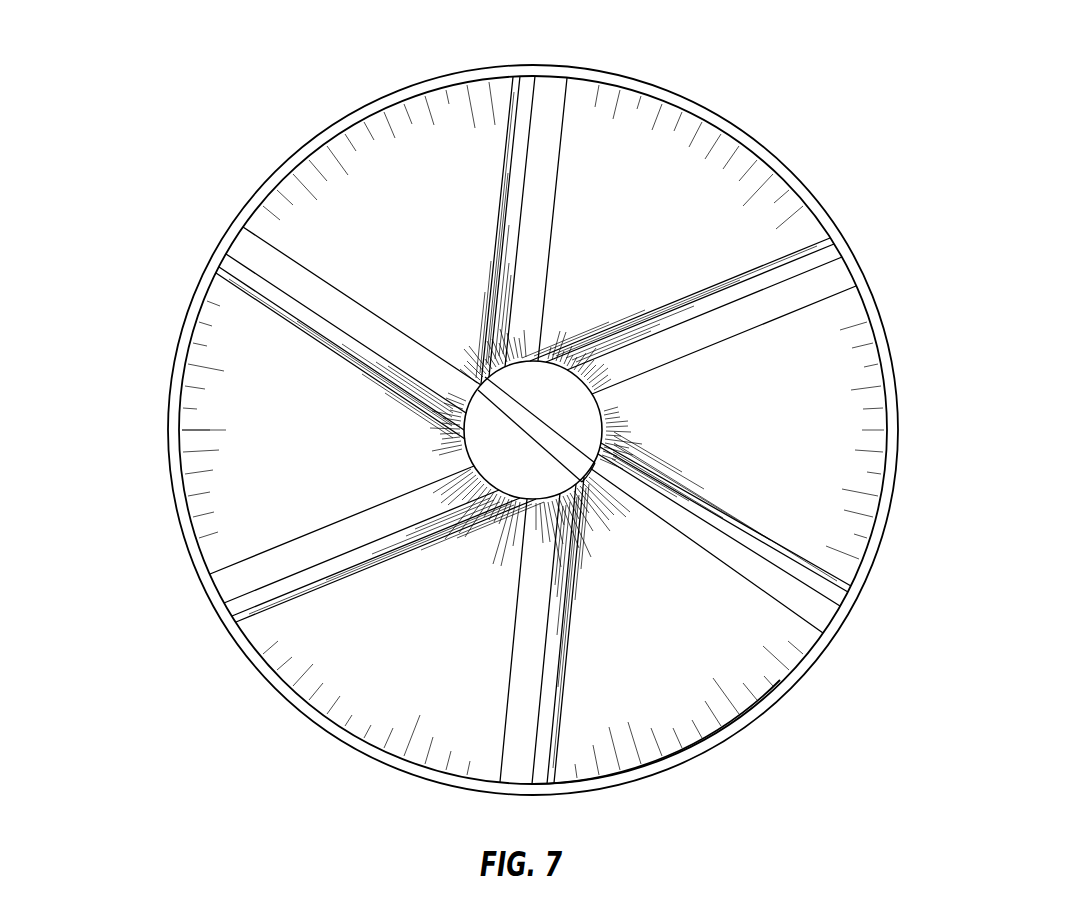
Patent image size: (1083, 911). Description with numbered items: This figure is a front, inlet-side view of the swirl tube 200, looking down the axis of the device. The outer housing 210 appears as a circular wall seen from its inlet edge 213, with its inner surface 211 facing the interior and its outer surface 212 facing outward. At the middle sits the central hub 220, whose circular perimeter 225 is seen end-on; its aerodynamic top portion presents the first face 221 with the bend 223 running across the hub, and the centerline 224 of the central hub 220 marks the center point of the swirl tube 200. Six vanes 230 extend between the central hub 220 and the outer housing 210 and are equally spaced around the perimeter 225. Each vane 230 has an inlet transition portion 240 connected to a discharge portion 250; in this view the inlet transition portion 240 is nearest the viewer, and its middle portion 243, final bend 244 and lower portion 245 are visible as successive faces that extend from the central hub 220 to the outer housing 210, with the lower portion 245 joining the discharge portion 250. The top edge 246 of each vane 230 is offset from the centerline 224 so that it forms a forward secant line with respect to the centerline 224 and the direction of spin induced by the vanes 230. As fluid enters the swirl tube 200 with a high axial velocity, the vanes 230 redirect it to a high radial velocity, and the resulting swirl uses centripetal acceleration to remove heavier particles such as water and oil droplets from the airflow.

The swirl tube 200 is at (529, 420).
The outer housing 210 is at (537, 437).
The inner surface 211 is at (190, 497).
The outer surface 212 is at (766, 716).
The inlet edge 213 is at (683, 757).
The central hub 220 is at (517, 422).
The first face 221 is at (478, 415).
The bend 223 is at (483, 388).
The centerline 224 is at (592, 414).
The circular perimeter 225 is at (547, 360).
The vanes 230 is at (537, 419).
The inlet transition portion 240 is at (738, 329).
The middle portion 243 is at (790, 270).
The final bend 244 is at (748, 296).
The lower portion 245 is at (716, 333).
The top edge 246 is at (300, 598).
The discharge portion 250 is at (850, 397).